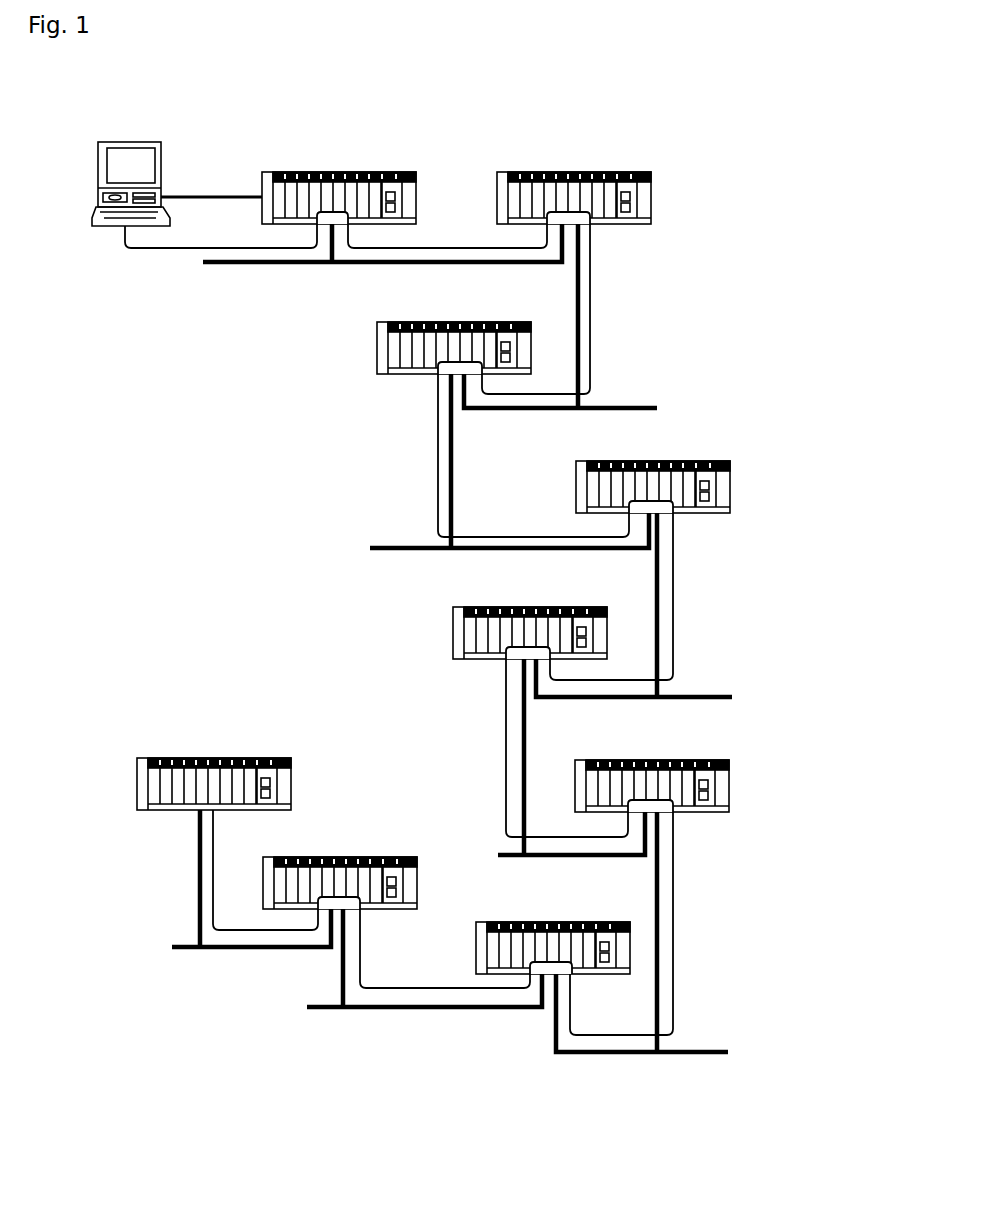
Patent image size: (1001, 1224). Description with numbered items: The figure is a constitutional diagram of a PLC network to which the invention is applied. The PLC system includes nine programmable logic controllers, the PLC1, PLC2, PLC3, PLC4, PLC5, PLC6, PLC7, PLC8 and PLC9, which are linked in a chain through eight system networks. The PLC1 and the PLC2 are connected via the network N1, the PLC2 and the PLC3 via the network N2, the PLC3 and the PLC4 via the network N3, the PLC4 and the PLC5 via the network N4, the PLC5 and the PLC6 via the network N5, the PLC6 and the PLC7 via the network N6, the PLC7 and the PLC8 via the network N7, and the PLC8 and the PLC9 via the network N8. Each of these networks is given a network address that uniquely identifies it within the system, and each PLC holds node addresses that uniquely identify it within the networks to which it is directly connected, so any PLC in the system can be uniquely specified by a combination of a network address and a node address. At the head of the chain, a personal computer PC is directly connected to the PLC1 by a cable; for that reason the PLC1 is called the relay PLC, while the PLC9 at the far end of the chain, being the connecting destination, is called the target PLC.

The personal computer PC is at (141, 130).
The relay PLC PLC1 is at (352, 162).
The PLC PLC2 is at (602, 162).
The PLC PLC3 is at (370, 353).
The PLC PLC4 is at (738, 479).
The PLC PLC5 is at (442, 638).
The PLC PLC6 is at (738, 773).
The PLC PLC7 is at (545, 916).
The PLC PLC8 is at (349, 850).
The target PLC PLC9 is at (208, 751).
The network N1 is at (343, 266).
The network N2 is at (584, 316).
The network N3 is at (458, 472).
The network N4 is at (662, 605).
The network N5 is at (571, 780).
The network N6 is at (670, 932).
The network N7 is at (375, 968).
The network N8 is at (209, 884).